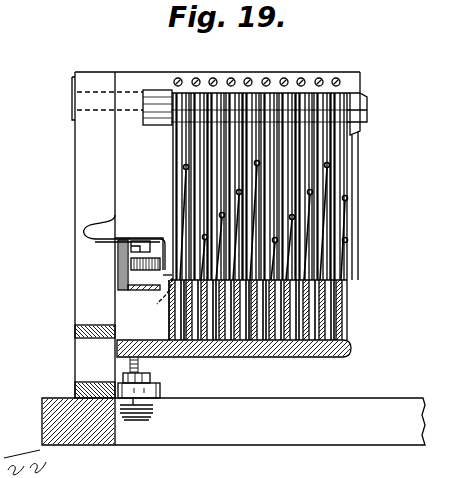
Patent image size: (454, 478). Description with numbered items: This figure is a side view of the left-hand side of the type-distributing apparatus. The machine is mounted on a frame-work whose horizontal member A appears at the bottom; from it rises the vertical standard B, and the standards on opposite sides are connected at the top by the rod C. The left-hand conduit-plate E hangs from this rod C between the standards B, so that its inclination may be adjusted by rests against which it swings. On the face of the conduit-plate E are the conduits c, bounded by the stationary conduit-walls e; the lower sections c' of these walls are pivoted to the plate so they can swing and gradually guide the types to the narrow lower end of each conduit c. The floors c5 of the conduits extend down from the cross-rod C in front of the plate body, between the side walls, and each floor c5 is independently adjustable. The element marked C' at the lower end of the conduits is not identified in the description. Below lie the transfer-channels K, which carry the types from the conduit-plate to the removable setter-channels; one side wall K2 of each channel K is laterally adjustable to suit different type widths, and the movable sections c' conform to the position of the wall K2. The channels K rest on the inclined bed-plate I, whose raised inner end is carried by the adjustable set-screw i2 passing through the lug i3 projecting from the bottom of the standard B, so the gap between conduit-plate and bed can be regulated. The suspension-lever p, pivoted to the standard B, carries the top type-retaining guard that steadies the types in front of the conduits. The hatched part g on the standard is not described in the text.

The vertical standard B is at (216, 235).
The rod C is at (281, 97).
The left-hand conduit-plate E is at (128, 180).
The conduit c is at (271, 186).
The stationary conduit-wall e is at (264, 220).
The movable side-wall section c' is at (265, 231).
The conduit floor c5 is at (345, 148).
The key bottom plate C' is at (274, 289).
The adjustable side wall K2 is at (266, 310).
The transfer-channel K is at (160, 310).
The bed-plate I is at (234, 357).
The horizontal frame member A is at (233, 421).
The hatched block g is at (75, 333).
The suspension-lever p is at (118, 262).
The adjustable support i2 is at (158, 371).
The lug i3 is at (162, 388).